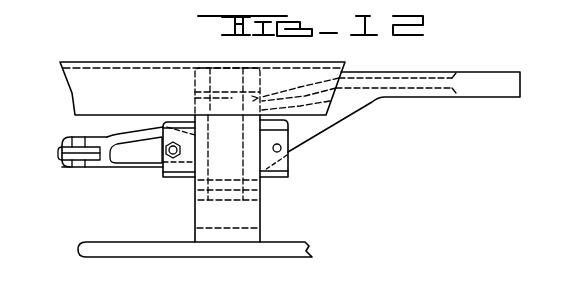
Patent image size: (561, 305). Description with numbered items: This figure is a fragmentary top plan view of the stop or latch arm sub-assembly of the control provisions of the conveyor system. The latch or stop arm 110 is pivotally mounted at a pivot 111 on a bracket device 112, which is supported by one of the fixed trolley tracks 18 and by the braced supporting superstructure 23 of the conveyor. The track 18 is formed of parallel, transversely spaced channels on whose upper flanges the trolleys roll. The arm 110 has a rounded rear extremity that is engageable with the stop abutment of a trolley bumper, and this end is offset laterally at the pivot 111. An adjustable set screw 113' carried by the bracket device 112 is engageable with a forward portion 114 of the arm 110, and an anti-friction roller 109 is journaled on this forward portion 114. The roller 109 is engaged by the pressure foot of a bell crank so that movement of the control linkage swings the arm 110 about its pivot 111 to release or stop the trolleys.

The track 18 is at (160, 82).
The latch or stop arm 110 is at (352, 100).
The pivot 111 is at (263, 182).
The supporting superstructure 23 is at (297, 250).
The adjustable set screw 113' is at (173, 162).
The bracket device 112 is at (282, 160).
The forward portion of the arm 114 is at (112, 163).
The anti-friction roller 109 is at (58, 156).